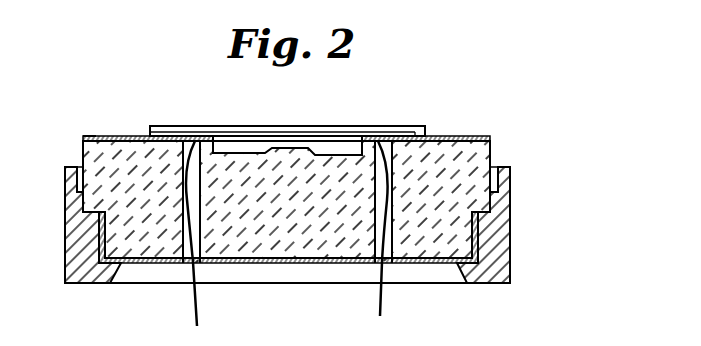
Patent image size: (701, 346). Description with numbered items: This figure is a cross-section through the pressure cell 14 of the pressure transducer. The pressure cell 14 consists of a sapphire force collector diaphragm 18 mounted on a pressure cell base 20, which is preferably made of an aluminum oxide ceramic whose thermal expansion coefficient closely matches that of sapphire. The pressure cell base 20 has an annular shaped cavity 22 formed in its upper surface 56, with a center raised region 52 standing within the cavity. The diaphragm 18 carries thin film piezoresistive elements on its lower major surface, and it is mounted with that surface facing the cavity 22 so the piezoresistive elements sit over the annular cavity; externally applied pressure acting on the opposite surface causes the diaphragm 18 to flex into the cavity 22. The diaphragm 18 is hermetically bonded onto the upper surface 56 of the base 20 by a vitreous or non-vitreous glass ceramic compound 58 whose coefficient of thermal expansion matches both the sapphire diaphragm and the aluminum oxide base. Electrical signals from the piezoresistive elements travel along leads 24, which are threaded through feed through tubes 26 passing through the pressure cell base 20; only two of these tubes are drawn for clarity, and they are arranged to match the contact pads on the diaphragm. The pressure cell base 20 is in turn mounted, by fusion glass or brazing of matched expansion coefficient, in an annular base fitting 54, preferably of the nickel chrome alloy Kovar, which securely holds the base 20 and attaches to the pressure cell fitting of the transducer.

The pressure cell 14 is at (512, 128).
The sapphire force collector diaphragm 18 is at (416, 128).
The pressure cell base 20 is at (476, 160).
The cavity 22 is at (338, 148).
The leads 24 is at (195, 306).
The feed through tubes 26 is at (200, 231).
The center raised region 52 is at (277, 147).
The base fitting 54 is at (503, 247).
The upper surface 56 is at (92, 135).
The glass ceramic compound 58 is at (128, 137).